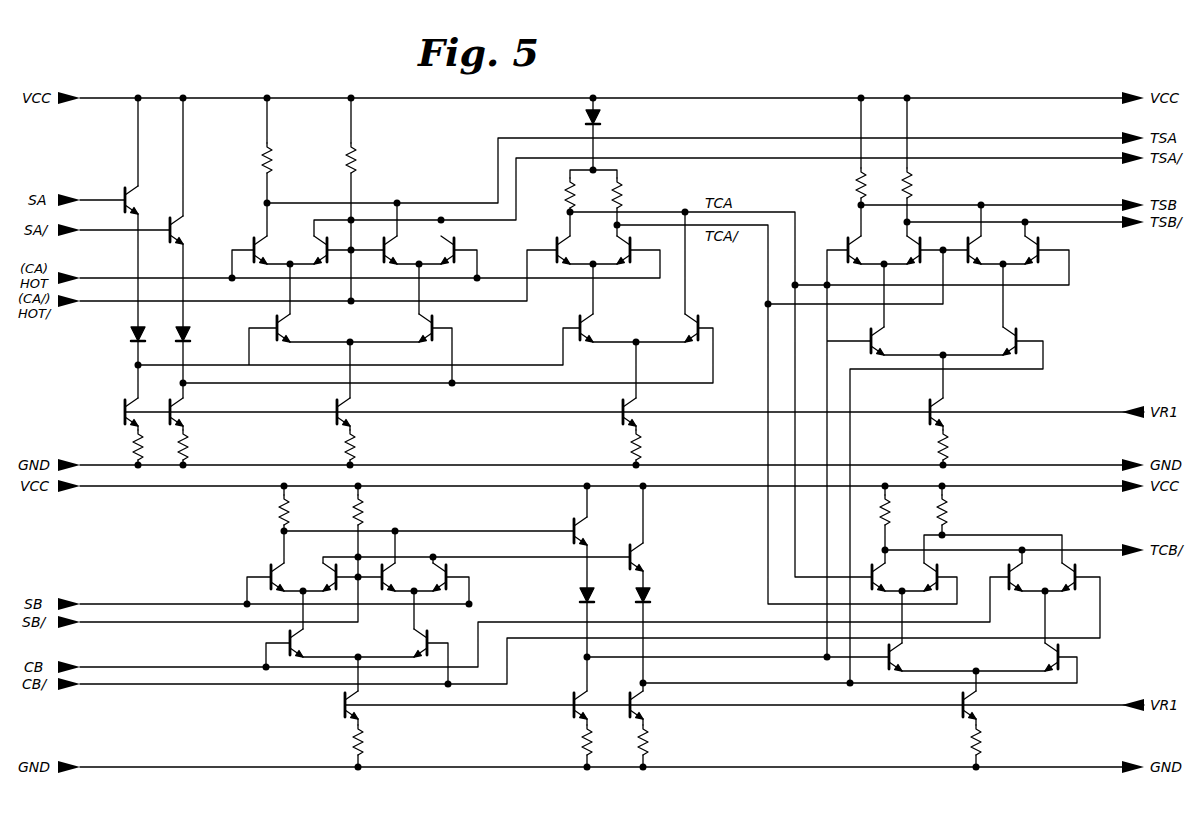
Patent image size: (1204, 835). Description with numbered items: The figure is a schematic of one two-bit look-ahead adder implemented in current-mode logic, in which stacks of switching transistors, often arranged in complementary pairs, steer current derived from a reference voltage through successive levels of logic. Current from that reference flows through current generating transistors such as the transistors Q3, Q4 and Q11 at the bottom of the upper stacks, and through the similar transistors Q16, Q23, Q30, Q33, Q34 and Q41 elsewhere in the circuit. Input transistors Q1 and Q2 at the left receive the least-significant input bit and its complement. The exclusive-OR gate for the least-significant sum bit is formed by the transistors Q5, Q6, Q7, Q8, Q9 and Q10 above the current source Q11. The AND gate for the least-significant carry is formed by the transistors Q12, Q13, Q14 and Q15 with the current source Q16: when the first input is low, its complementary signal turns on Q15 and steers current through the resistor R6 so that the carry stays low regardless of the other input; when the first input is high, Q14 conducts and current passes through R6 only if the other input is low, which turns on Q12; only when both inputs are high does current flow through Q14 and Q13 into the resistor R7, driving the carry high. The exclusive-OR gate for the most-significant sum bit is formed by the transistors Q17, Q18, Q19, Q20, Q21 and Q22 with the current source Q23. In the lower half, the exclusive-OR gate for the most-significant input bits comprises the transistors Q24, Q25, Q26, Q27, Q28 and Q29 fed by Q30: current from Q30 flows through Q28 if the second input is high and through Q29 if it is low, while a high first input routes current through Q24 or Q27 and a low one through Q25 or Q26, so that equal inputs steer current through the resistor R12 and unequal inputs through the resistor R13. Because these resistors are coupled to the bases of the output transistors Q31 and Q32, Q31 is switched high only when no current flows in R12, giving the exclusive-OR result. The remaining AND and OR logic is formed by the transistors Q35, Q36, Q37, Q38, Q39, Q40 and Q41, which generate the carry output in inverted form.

The transistor Q1 is at (144, 200).
The transistor Q2 is at (189, 230).
The current generating transistor Q3 is at (113, 412).
The current generating transistor Q4 is at (189, 410).
The transistor Q5 is at (269, 250).
The transistor Q6 is at (332, 245).
The transistor Q7 is at (398, 250).
The transistor Q8 is at (459, 245).
The transistor Q9 is at (294, 328).
The transistor Q10 is at (409, 328).
The current generating transistor Q11 is at (361, 410).
The transistor Q12 is at (576, 250).
The transistor Q13 is at (640, 246).
The transistor Q14 is at (602, 328).
The transistor Q15 is at (674, 328).
The transistor Q16 is at (647, 410).
The transistor Q17 is at (868, 250).
The transistor Q18 is at (930, 245).
The transistor Q19 is at (988, 250).
The transistor Q20 is at (1051, 246).
The transistor Q21 is at (894, 341).
The transistor Q22 is at (994, 341).
The transistor Q23 is at (954, 410).
The transistor Q24 is at (258, 570).
The transistor Q25 is at (317, 577).
The transistor Q26 is at (402, 577).
The transistor Q27 is at (457, 574).
The transistor Q28 is at (312, 643).
The transistor Q29 is at (405, 643).
The transistor Q30 is at (331, 705).
The transistor Q31 is at (596, 531).
The transistor Q32 is at (652, 557).
The transistor Q33 is at (565, 698).
The transistor Q34 is at (623, 698).
The transistor Q35 is at (891, 577).
The transistor Q36 is at (947, 573).
The transistor Q37 is at (1029, 577).
The transistor Q38 is at (1086, 573).
The transistor Q39 is at (911, 657).
The transistor Q40 is at (1033, 657).
The transistor Q41 is at (951, 707).
The resistor R6 is at (556, 193).
The resistor R7 is at (628, 193).
The resistor R12 is at (301, 510).
The resistor R13 is at (375, 510).